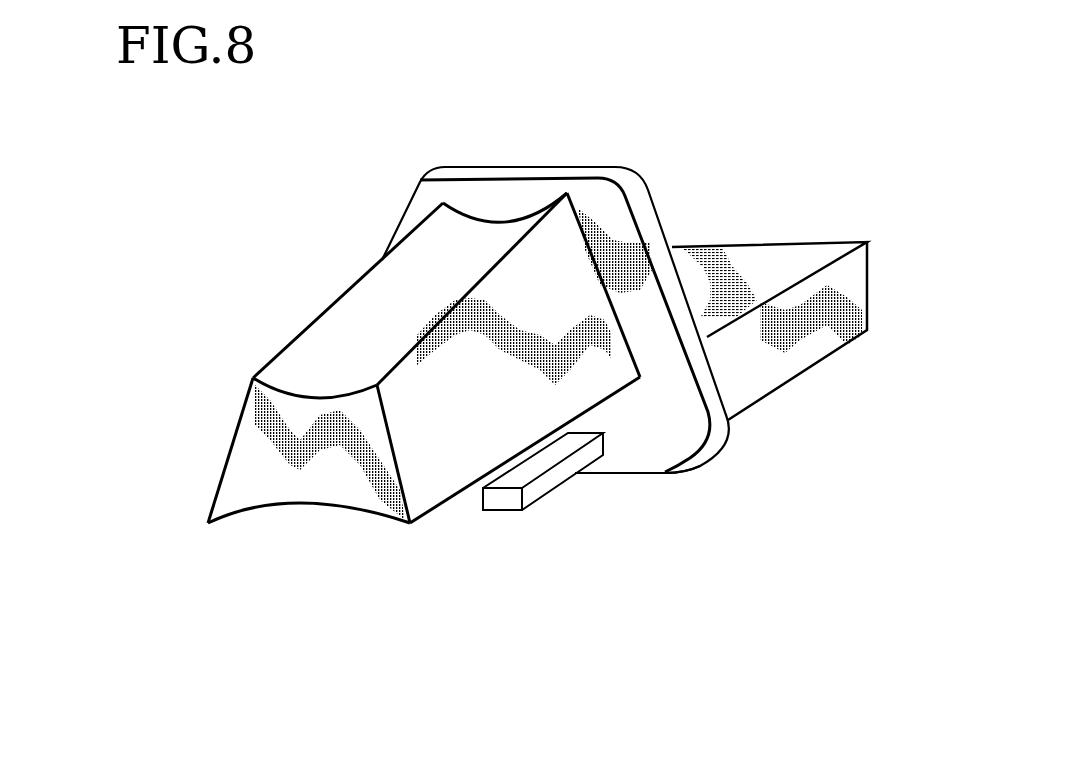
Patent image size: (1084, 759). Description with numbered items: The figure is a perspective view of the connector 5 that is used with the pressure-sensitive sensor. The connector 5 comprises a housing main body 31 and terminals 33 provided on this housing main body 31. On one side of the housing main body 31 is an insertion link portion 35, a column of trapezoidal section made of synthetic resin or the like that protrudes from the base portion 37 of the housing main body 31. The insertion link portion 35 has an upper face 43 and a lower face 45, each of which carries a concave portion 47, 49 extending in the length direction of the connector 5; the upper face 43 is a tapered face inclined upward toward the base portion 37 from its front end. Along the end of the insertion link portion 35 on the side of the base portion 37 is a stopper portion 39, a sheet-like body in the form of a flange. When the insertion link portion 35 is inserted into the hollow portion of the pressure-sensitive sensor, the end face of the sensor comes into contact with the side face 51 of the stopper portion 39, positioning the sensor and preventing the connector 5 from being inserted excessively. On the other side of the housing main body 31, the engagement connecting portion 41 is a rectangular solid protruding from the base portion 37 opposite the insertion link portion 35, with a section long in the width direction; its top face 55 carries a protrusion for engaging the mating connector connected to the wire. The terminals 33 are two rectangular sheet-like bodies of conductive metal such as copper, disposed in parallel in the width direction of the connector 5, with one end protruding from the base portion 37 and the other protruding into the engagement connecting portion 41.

The connector 5 is at (637, 121).
The housing main body 31 is at (438, 166).
The terminal 33 is at (517, 497).
The insertion link portion 35 is at (230, 450).
The base portion 37 is at (597, 241).
The stopper portion 39 is at (718, 428).
The engagement connecting portion 41 is at (818, 343).
The upper face 43 is at (302, 332).
The lower face 45 is at (220, 522).
The concave portion 47 is at (360, 330).
The concave portion 49 is at (312, 505).
The side face 51 is at (643, 443).
The top face 55 is at (780, 256).